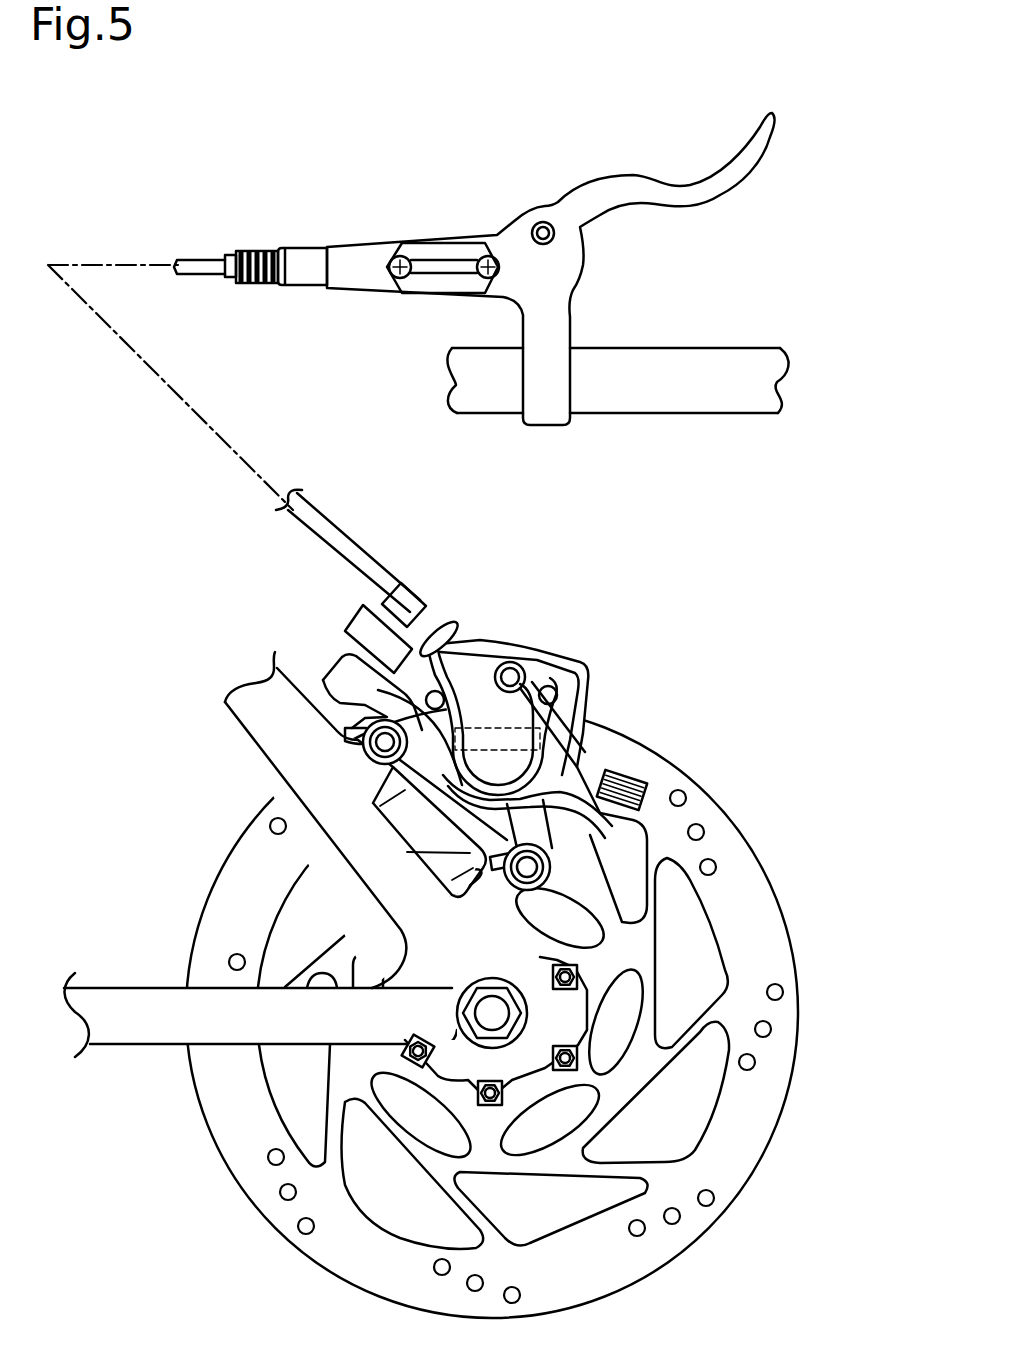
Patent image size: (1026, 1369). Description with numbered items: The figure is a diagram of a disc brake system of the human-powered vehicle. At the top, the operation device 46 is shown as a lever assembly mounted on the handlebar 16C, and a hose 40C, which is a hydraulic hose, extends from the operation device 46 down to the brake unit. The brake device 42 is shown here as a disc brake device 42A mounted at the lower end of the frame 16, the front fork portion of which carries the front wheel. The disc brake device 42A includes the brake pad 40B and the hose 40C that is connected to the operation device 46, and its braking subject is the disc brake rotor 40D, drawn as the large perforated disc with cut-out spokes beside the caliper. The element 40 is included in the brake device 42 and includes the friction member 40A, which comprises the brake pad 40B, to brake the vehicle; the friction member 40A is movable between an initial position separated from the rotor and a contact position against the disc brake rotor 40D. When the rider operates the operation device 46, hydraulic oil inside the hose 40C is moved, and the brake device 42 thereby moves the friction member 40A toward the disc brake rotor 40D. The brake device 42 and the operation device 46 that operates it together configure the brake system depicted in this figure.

The operation device 46 is at (516, 228).
The handlebar 16C is at (705, 352).
The hose 40C is at (338, 537).
The element 40 is at (544, 753).
The friction member 40A is at (544, 753).
The brake pad 40B is at (497, 727).
The disc brake rotor 40D is at (762, 893).
The brake device 42 is at (482, 904).
The disc brake device 42A is at (482, 904).
The frame 16 is at (131, 1044).